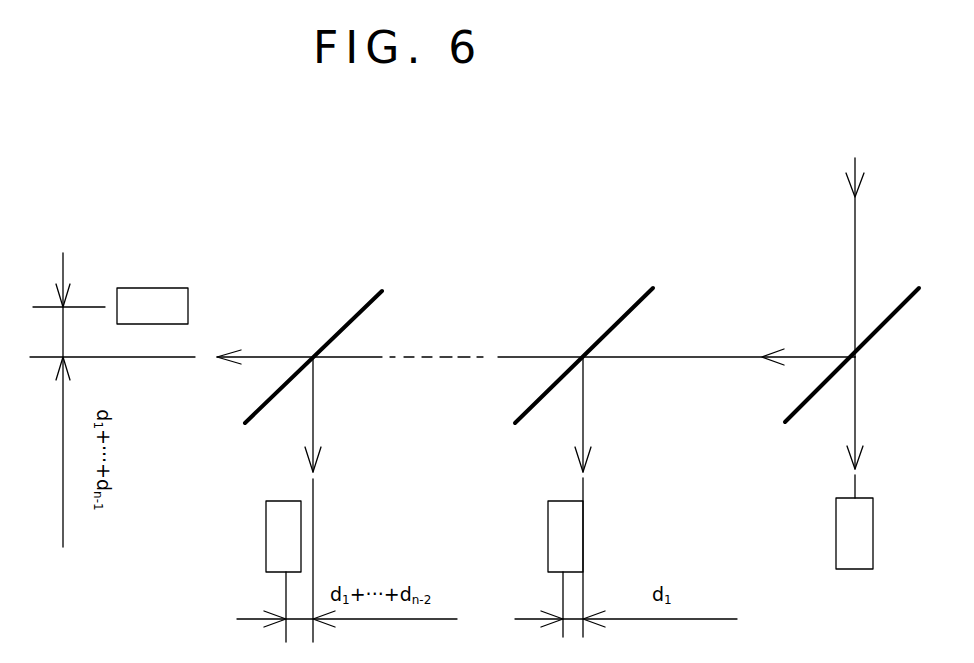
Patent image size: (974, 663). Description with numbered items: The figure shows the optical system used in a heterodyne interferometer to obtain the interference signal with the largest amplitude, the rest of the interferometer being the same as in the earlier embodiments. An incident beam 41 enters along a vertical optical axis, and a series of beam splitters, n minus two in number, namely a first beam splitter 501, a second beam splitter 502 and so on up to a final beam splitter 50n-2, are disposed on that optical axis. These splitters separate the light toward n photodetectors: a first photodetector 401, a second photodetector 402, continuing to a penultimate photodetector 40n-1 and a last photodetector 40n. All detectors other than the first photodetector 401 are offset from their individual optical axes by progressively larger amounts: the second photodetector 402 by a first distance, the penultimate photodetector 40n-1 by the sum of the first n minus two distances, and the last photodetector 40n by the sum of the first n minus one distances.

The incident beam 41 is at (855, 248).
The first beam splitter 501 is at (886, 323).
The second beam splitter 502 is at (627, 312).
The (n-2)th beam splitter 50n-2 is at (362, 308).
The first photodetector 401 is at (836, 534).
The second photodetector 402 is at (548, 531).
The (n-1)th photodetector 40n-1 is at (266, 518).
The nth photodetector 40n is at (165, 288).